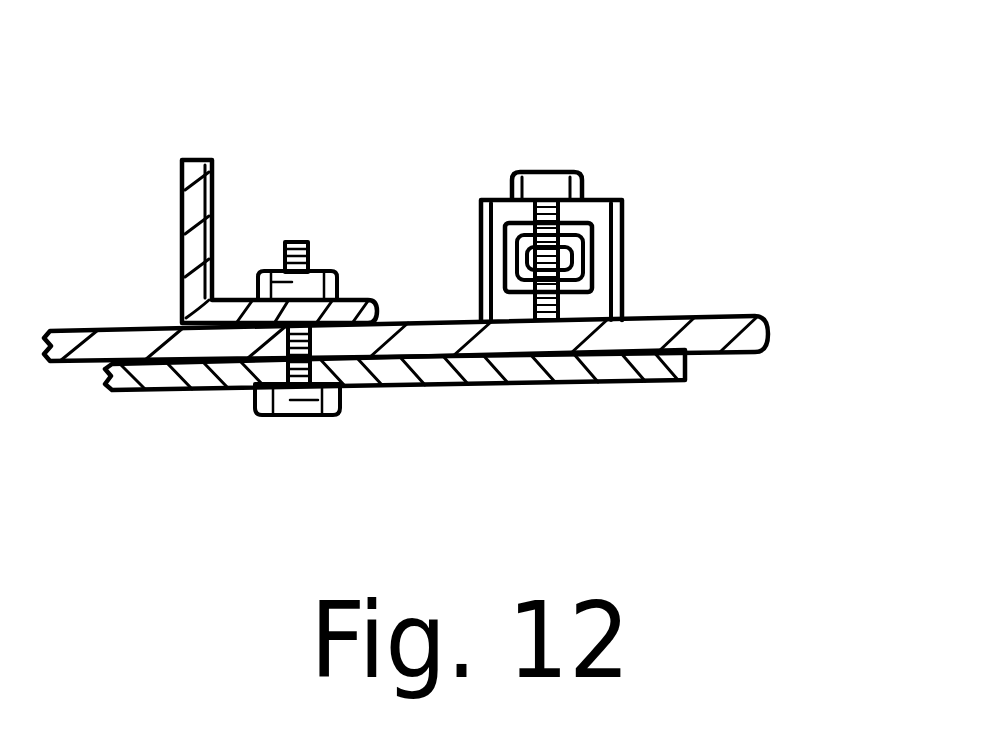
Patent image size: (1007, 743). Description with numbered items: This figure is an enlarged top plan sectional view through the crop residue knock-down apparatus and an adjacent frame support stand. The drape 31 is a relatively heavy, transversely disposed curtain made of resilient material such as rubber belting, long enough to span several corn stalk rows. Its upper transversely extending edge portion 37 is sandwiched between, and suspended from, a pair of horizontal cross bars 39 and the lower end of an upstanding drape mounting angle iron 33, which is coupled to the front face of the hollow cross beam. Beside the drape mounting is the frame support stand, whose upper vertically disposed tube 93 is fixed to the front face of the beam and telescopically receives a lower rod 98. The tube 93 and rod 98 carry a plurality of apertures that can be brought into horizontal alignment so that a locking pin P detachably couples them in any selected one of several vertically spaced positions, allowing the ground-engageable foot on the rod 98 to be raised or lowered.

The drape 31 is at (766, 335).
The drape mounting angle iron 33 is at (182, 197).
The upper transversely extending edge portion 37 is at (648, 312).
The horizontal cross bar 39 is at (597, 383).
The upper vertically disposed tube 93 is at (602, 197).
The lower rod 98 is at (593, 243).
The locking pin P is at (532, 173).